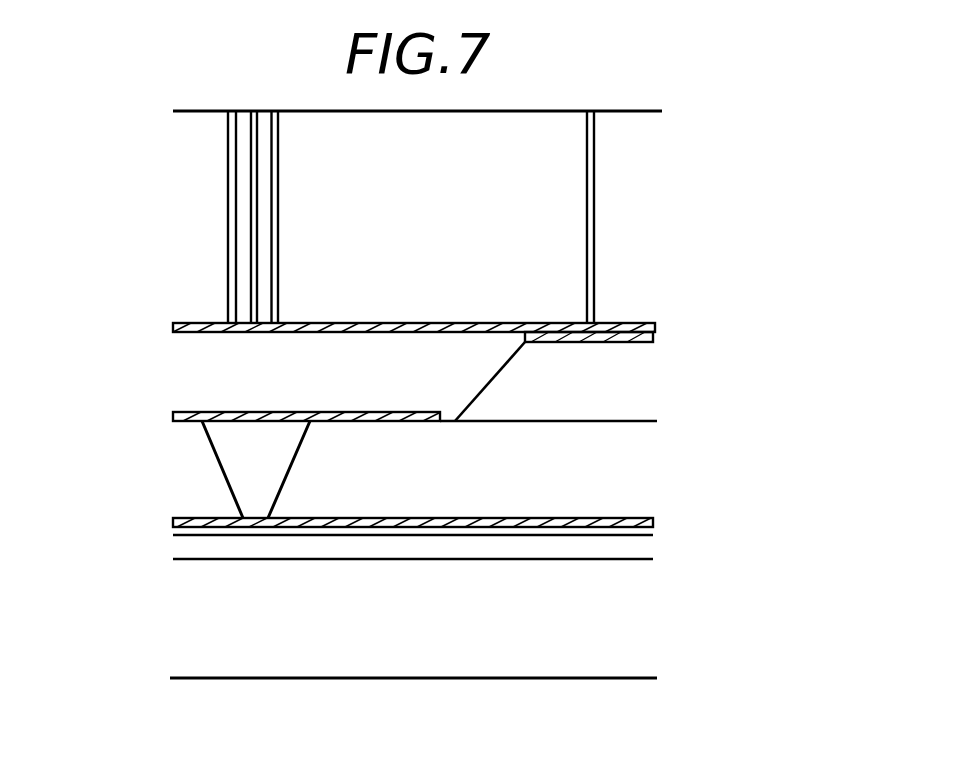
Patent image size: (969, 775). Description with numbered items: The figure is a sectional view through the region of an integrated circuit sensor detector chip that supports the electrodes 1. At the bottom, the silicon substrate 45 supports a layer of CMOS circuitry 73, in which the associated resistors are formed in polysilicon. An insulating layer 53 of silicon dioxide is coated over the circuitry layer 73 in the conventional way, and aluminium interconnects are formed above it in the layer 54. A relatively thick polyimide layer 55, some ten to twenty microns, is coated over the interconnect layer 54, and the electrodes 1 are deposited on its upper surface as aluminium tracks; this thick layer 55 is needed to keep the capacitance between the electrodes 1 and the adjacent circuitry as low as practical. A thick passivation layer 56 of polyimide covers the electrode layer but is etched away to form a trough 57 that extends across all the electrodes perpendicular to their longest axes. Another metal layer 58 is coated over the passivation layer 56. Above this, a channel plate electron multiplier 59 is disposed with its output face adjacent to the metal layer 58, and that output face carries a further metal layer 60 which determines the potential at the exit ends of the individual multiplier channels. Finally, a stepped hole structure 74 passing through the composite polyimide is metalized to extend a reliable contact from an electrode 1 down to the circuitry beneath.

The electrodes 1 is at (213, 412).
The silicon substrate 45 is at (424, 625).
The insulating layer 53 is at (660, 532).
The aluminium interconnect layer 54 is at (650, 520).
The polyimide layer 55 is at (512, 470).
The passivation layer 56 is at (594, 394).
The trough 57 is at (331, 390).
The metal layer 58 is at (645, 342).
The channel plate electron multiplier 59 is at (482, 253).
The metal layer on output face 60 is at (620, 323).
The layer of CMOS circuitry 73 is at (648, 548).
The hole structure 74 is at (276, 467).